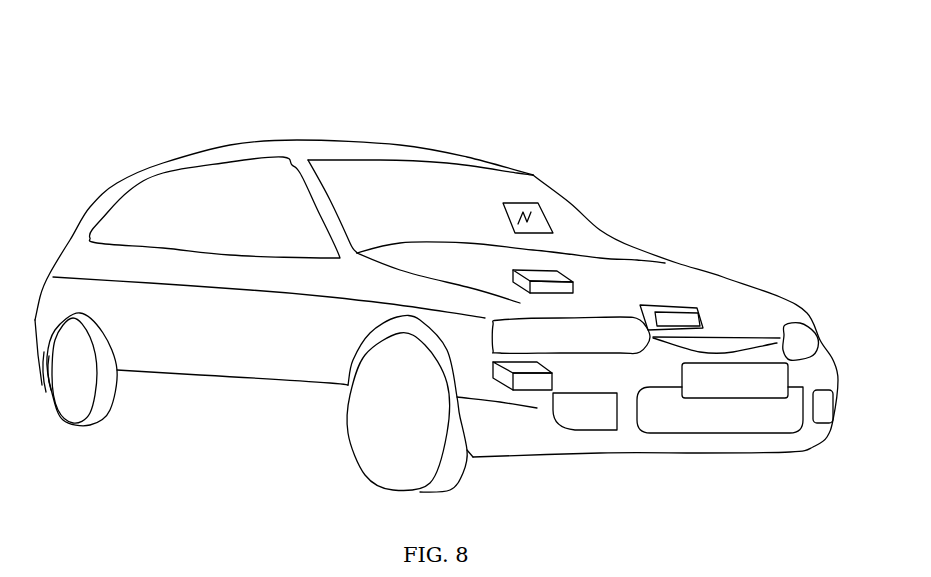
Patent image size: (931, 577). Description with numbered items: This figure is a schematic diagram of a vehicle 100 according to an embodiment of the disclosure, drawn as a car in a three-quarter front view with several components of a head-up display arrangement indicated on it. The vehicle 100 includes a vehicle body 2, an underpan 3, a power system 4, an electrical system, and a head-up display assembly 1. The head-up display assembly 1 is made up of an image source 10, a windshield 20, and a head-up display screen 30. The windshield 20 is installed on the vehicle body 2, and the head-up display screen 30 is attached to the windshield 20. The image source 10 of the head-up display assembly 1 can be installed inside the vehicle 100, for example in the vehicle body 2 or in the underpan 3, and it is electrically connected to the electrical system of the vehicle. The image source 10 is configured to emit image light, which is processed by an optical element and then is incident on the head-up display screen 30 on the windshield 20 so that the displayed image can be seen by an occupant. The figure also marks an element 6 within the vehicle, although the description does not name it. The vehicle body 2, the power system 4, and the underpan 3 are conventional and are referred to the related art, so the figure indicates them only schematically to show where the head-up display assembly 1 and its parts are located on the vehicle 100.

The vehicle 100 is at (131, 34).
The head-up display assembly 1 is at (697, 187).
The vehicle body 2 is at (617, 273).
The underpan 3 is at (310, 388).
The power system 4 is at (687, 310).
The sensor module 6 is at (555, 277).
The image source 10 is at (555, 277).
The windshield 20 is at (440, 172).
The head-up display screen 30 is at (538, 203).